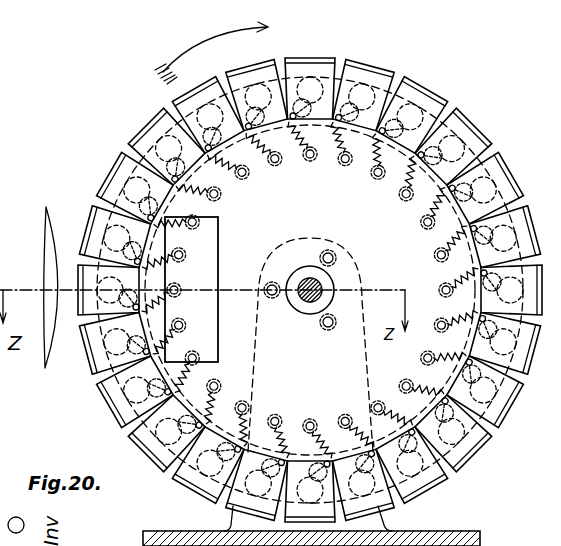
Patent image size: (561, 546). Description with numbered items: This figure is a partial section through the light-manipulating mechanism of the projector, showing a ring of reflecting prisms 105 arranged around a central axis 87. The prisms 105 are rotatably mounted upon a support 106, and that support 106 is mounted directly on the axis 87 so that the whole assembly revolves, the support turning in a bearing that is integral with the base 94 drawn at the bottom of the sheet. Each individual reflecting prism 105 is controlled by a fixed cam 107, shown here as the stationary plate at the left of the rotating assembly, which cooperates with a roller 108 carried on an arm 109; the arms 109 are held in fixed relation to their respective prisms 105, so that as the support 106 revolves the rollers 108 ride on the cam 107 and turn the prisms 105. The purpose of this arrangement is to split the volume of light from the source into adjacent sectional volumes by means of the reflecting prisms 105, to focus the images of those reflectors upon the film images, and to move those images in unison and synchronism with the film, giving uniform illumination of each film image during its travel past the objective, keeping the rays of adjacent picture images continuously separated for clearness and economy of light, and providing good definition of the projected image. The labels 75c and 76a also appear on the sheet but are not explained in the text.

The reflecting prism 105 is at (92, 220).
The support 106 is at (180, 185).
The arm 109 is at (198, 131).
The roller 108 is at (152, 193).
The fixed cam 107 is at (200, 313).
The axis 87 is at (307, 280).
The base 94 is at (437, 533).
The part 75c is at (547, 55).
The part 76a is at (560, 100).